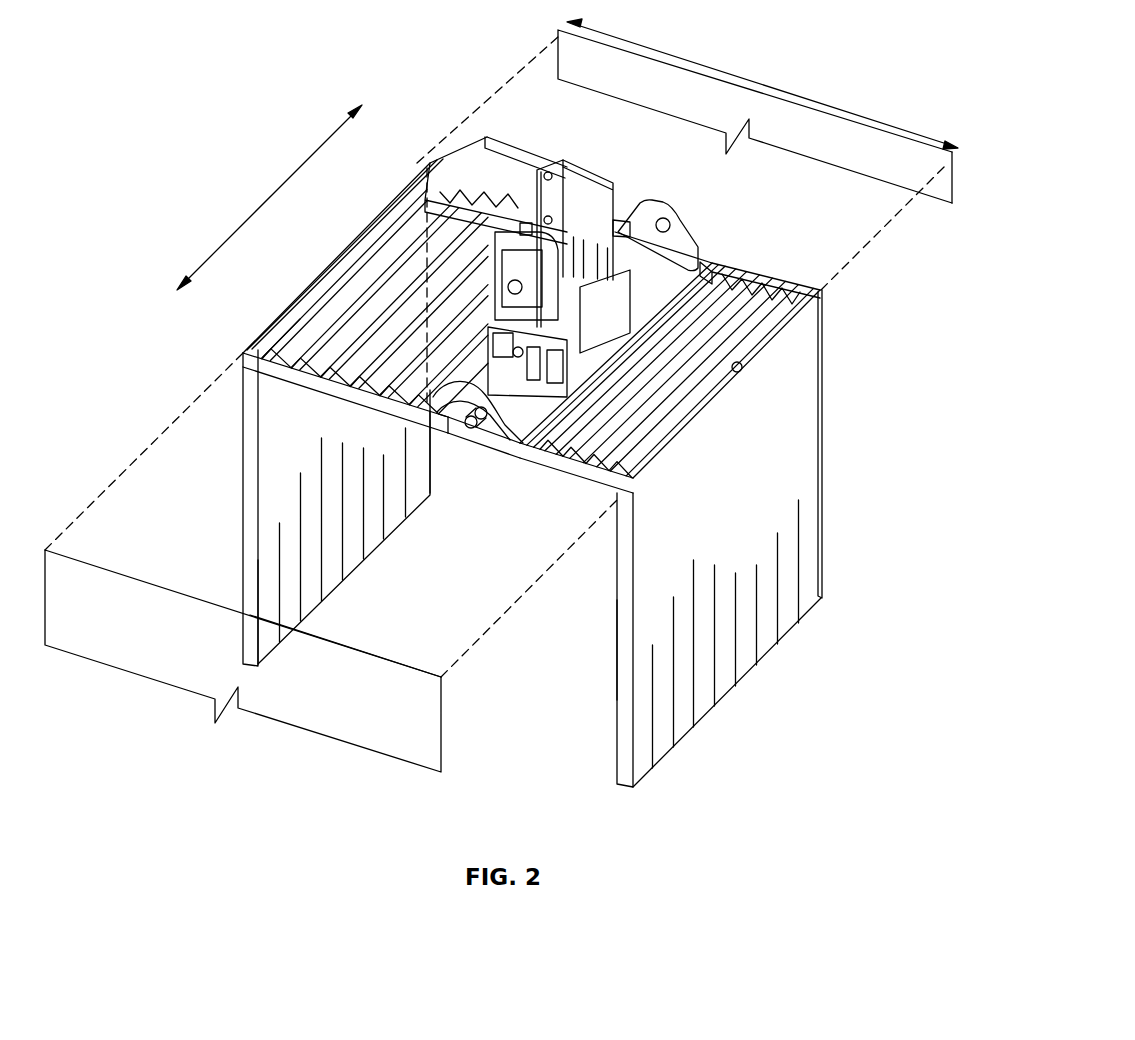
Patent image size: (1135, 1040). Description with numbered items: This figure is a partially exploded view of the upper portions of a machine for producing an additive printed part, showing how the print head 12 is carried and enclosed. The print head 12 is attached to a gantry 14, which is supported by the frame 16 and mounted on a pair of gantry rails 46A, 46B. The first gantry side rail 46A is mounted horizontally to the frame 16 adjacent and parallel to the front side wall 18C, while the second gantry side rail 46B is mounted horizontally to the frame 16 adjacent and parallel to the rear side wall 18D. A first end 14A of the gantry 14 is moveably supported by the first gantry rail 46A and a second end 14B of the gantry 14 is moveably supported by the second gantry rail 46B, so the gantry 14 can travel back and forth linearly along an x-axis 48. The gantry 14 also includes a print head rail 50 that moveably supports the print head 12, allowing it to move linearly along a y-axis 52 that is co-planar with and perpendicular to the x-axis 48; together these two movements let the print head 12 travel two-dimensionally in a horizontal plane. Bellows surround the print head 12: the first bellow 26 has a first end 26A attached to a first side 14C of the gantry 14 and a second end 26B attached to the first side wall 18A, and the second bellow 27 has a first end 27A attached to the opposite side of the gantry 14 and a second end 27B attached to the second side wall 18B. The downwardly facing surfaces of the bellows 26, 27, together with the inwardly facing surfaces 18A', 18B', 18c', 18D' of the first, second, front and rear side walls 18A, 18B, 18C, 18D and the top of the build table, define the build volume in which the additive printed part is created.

The print head 12 is at (577, 164).
The gantry 14 is at (490, 433).
The first end of the gantry 14A is at (443, 472).
The second end of the gantry 14B is at (670, 203).
The first side of the gantry 14C is at (622, 224).
The frame 16 is at (243, 412).
The first side wall 18A is at (344, 527).
The inwardly facing surface of the first side panel 18A' is at (364, 583).
The second side wall 18B is at (755, 643).
The inwardly facing surface of the second side panel 18B' is at (573, 650).
The front side wall 18C is at (87, 633).
The inwardly facing surface of the front side panel 18c' is at (345, 640).
The rear side wall 18D is at (755, 116).
The inwardly facing surface of the rear side panel 18D' is at (925, 143).
The first bellow 26 is at (342, 313).
The first end of the first bellow 26A is at (467, 330).
The second end of the first bellow 26B is at (357, 237).
The second bellow 27 is at (767, 328).
The first end of the second bellow 27A is at (727, 267).
The second end of the second bellow 27B is at (742, 368).
The first gantry side rail 46A is at (585, 458).
The second gantry side rail 46B is at (713, 268).
The x-axis 48 is at (765, 86).
The print head rail 50 is at (467, 368).
The y-axis 52 is at (282, 186).